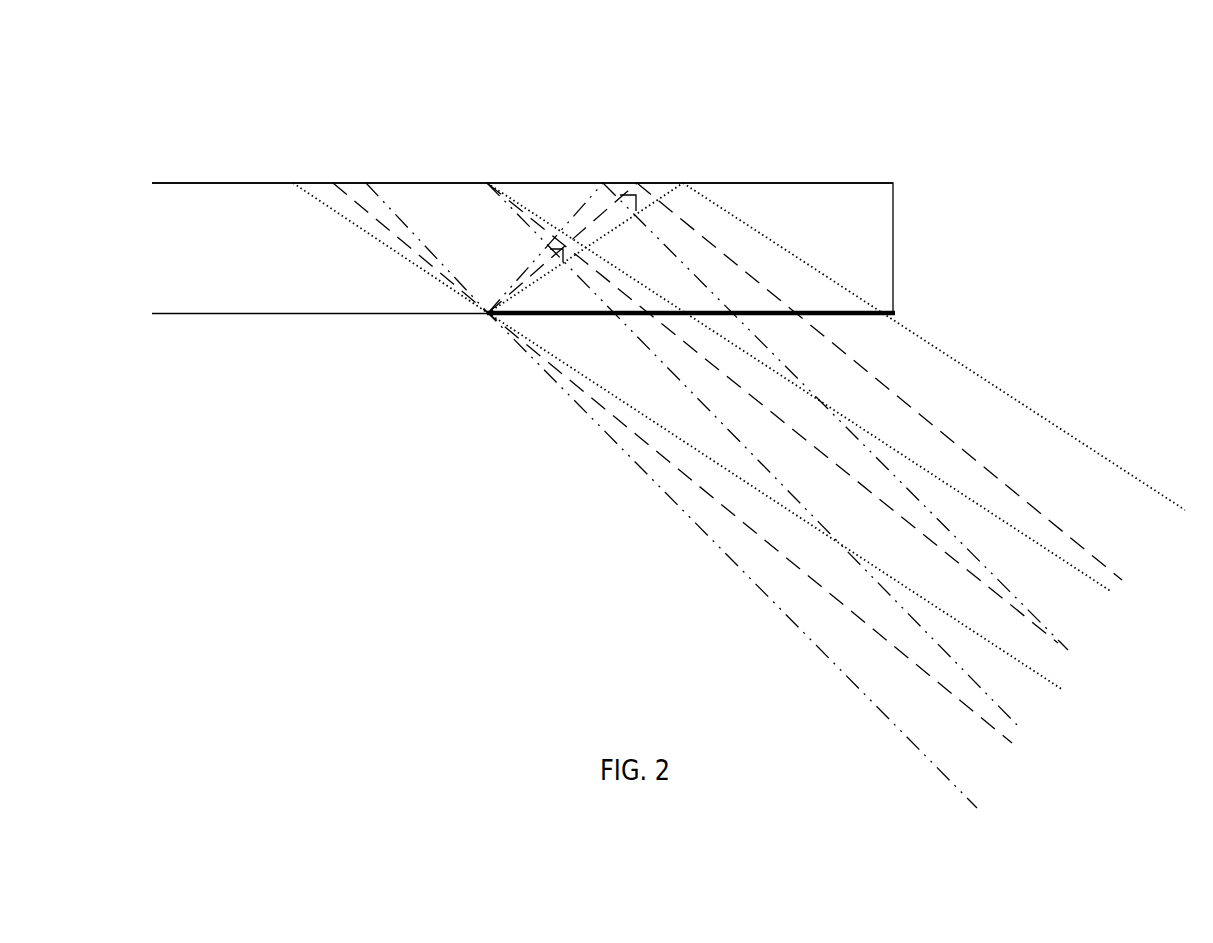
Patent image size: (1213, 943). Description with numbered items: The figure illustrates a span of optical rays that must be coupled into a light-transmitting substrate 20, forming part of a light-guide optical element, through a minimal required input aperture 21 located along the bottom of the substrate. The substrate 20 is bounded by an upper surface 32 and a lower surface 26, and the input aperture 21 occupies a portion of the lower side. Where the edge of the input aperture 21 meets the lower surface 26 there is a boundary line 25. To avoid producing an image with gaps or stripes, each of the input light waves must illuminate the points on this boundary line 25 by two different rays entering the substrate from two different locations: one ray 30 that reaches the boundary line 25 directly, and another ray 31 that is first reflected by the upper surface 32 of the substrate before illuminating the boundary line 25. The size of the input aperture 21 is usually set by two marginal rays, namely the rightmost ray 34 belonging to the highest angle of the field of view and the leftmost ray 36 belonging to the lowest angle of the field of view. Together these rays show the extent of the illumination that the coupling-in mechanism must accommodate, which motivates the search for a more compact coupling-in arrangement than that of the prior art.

The substrate 20 is at (350, 280).
The input aperture 21 is at (812, 311).
The boundary line 25 is at (487, 315).
The lower surface 26 is at (413, 316).
The ray 30 is at (677, 468).
The ray 31 is at (937, 428).
The upper surface 32 is at (747, 183).
The rightmost ray 34 is at (915, 335).
The leftmost ray 36 is at (583, 407).